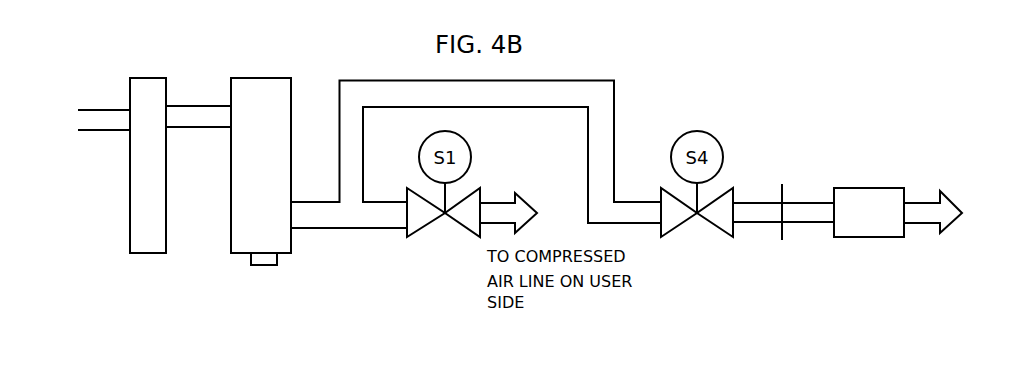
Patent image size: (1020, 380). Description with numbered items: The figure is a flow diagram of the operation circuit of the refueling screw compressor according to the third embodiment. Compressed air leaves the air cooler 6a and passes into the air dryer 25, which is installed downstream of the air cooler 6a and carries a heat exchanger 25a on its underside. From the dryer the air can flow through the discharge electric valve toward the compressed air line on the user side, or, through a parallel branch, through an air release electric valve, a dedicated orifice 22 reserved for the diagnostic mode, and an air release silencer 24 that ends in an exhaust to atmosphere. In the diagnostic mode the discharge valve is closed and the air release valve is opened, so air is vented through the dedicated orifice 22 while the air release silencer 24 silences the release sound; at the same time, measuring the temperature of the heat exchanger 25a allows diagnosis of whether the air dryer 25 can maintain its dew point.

The air cooler 6a is at (139, 167).
The air dryer 25 is at (238, 232).
The heat exchanger 25a is at (260, 261).
The dedicated orifice 22 is at (785, 178).
The air release silencer 24 is at (870, 205).